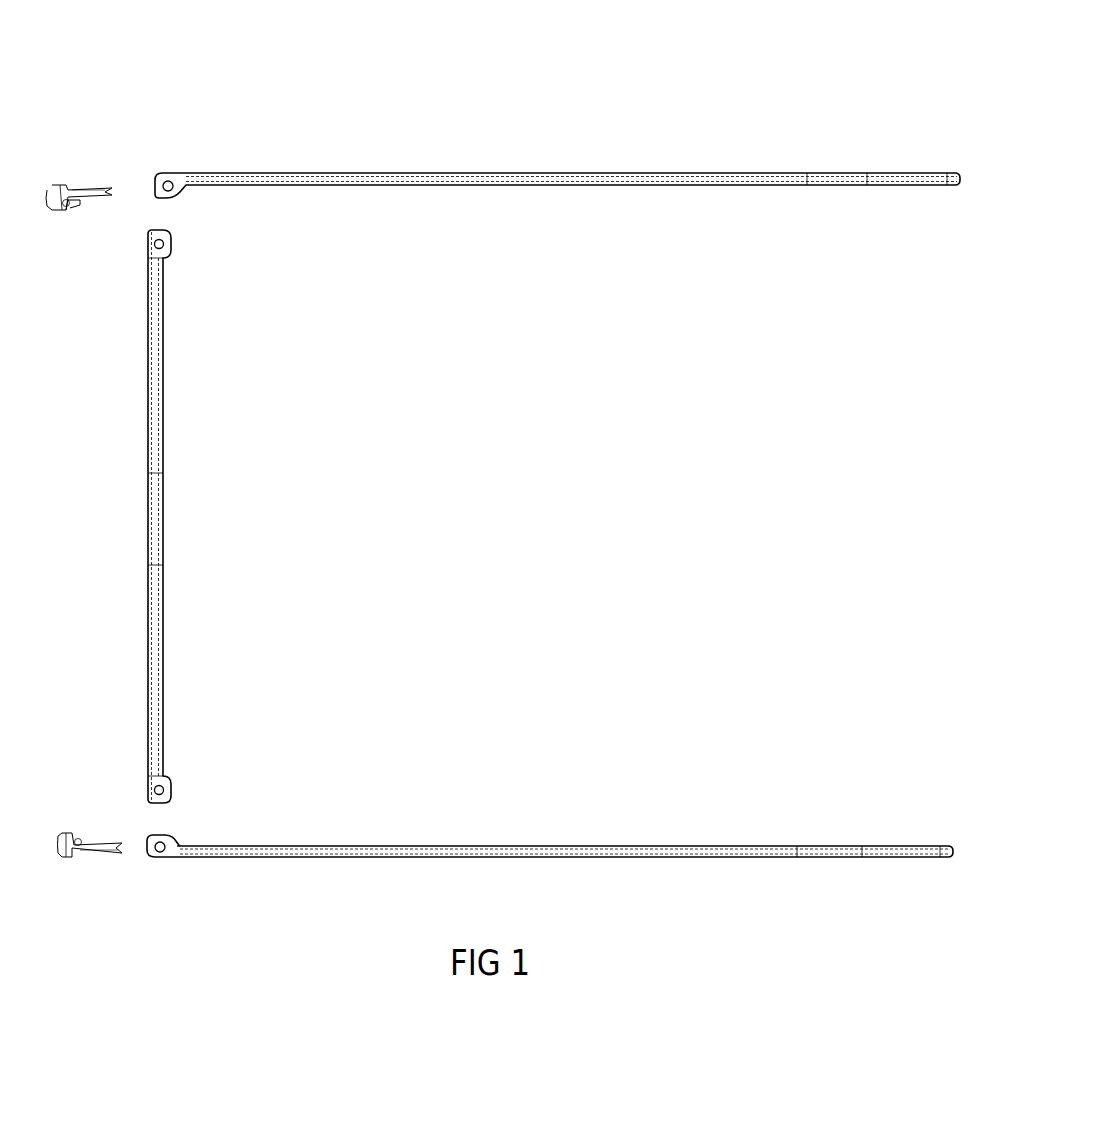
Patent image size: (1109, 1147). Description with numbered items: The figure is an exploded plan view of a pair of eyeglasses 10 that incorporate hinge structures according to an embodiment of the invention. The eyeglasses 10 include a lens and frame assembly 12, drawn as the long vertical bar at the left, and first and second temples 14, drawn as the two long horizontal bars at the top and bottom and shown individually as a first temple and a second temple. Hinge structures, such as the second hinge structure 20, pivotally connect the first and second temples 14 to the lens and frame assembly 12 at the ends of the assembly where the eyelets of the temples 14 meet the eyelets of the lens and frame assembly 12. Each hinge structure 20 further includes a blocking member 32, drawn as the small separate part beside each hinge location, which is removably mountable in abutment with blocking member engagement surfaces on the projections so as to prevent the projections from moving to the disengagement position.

The eyeglasses 10 is at (697, 78).
The lens and frame assembly 12 is at (166, 503).
The temples 14 is at (356, 178).
The second hinge structure 20 is at (112, 220).
The blocking member 32 is at (81, 190).